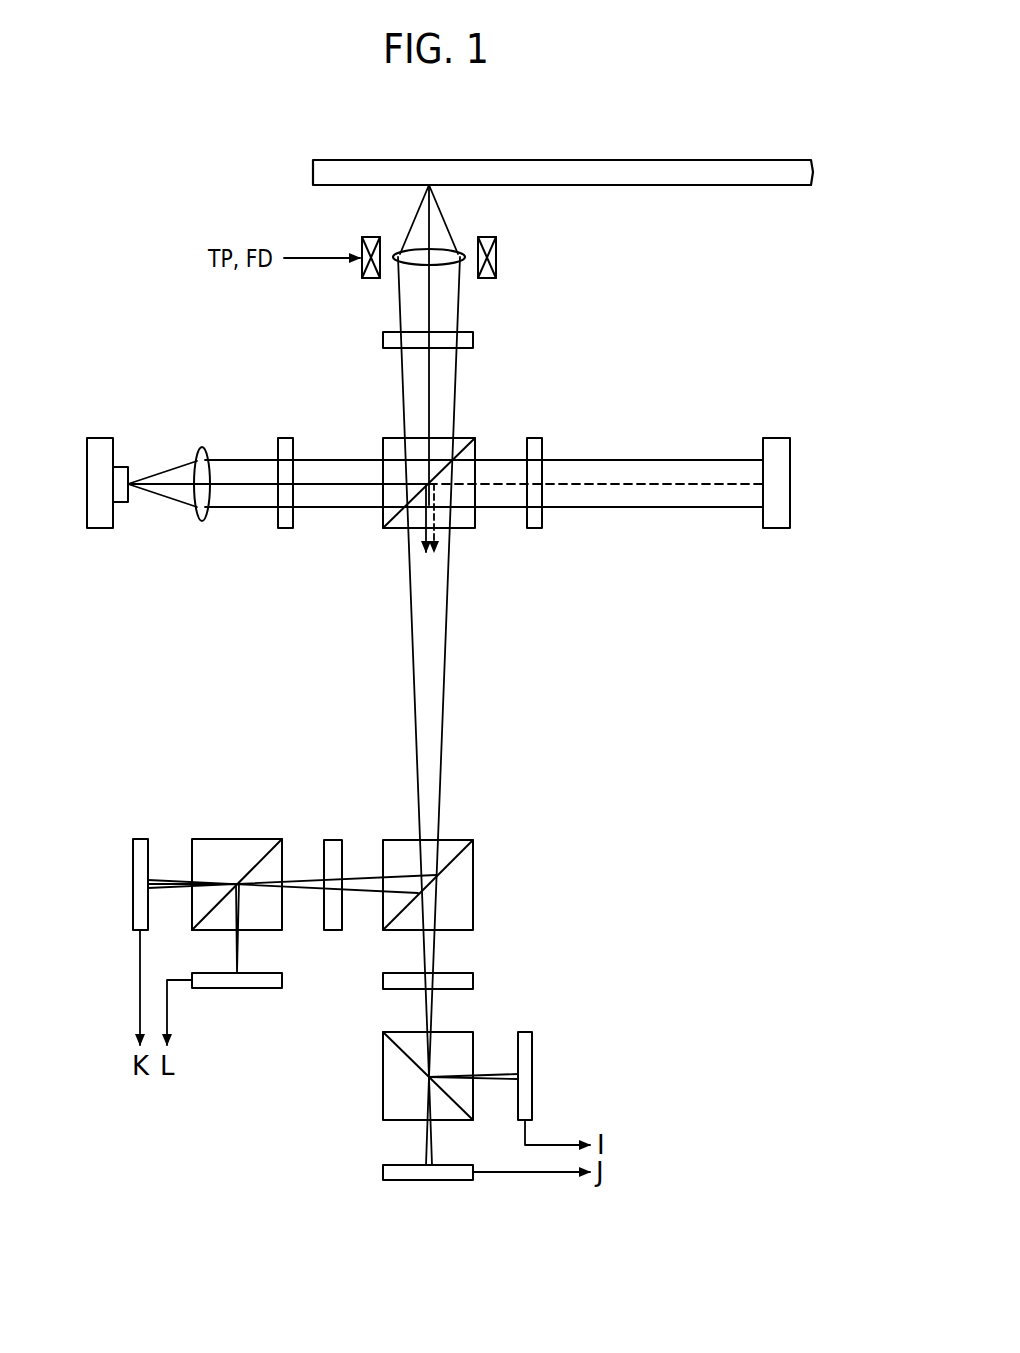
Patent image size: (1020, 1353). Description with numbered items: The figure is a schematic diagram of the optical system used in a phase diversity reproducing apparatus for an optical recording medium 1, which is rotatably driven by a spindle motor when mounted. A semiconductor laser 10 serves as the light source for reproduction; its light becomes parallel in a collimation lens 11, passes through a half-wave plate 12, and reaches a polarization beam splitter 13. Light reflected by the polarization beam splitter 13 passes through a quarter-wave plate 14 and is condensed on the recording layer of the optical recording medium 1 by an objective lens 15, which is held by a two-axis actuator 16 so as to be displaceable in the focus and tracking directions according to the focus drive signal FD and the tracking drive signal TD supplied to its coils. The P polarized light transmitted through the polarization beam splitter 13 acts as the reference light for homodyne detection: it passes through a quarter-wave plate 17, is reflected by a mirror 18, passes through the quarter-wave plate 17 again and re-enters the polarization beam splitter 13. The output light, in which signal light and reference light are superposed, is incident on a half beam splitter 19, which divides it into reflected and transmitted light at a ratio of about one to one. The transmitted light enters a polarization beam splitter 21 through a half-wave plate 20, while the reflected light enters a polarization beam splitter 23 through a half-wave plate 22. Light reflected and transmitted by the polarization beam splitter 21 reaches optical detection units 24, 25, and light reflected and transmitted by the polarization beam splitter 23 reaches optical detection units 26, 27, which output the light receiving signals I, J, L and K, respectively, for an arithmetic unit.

The optical recording medium 1 is at (392, 157).
The laser 10 is at (100, 438).
The collimation lens 11 is at (202, 447).
The half-wave plate 12 is at (285, 438).
The polarization beam splitter 13 is at (392, 441).
The quarter-wave plate 14 is at (473, 340).
The objective lens 15 is at (465, 252).
The two-axis actuator 16 is at (497, 257).
The quarter-wave plate 17 is at (534, 438).
The mirror 18 is at (776, 438).
The half beam splitter 19 is at (390, 840).
The half-wave plate 20 is at (473, 981).
The polarization beam splitter 21 is at (385, 1078).
The half-wave plate 22 is at (333, 840).
The polarization beam splitter 23 is at (237, 840).
The optical detection unit 24 is at (530, 1077).
The optical detection unit 25 is at (385, 1173).
The optical detection unit 26 is at (237, 990).
The optical detection unit 27 is at (140, 839).